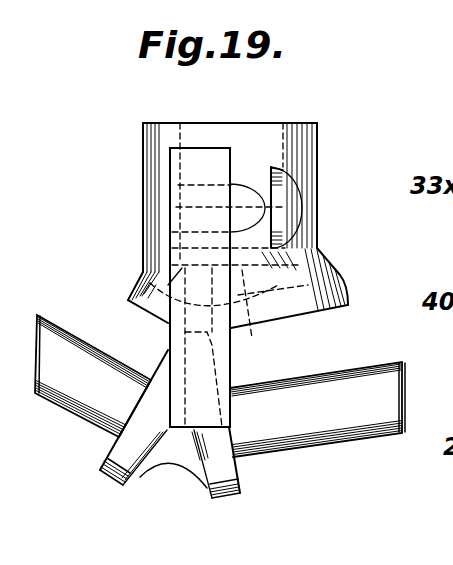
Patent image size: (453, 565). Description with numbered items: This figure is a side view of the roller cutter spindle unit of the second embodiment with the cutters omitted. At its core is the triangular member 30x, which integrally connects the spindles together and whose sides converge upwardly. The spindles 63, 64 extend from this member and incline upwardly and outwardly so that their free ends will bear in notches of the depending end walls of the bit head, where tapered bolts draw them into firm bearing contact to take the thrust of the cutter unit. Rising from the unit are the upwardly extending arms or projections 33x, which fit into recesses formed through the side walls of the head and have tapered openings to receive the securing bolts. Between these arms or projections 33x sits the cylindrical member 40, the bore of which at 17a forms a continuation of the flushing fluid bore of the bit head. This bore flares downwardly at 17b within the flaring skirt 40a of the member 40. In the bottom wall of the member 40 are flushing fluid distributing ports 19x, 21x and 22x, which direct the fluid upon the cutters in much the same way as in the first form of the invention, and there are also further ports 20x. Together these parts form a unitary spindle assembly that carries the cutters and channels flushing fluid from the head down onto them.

The bore of cylindrical member 17a is at (200, 128).
The downwardly flaring portion of bore 17b is at (167, 243).
The upwardly extending arms or projections 33x is at (190, 170).
The cylindrical member 40 is at (283, 152).
The flushing fluid distributing port 21x is at (150, 266).
The flaring skirt 40a is at (328, 258).
The flushing fluid distributing port 22x is at (276, 268).
The flushing fluid distributing port 19x is at (262, 320).
The spindle 63 is at (82, 362).
The spindle 64 is at (305, 397).
The ports 20x is at (190, 435).
The triangular member 30x is at (187, 447).